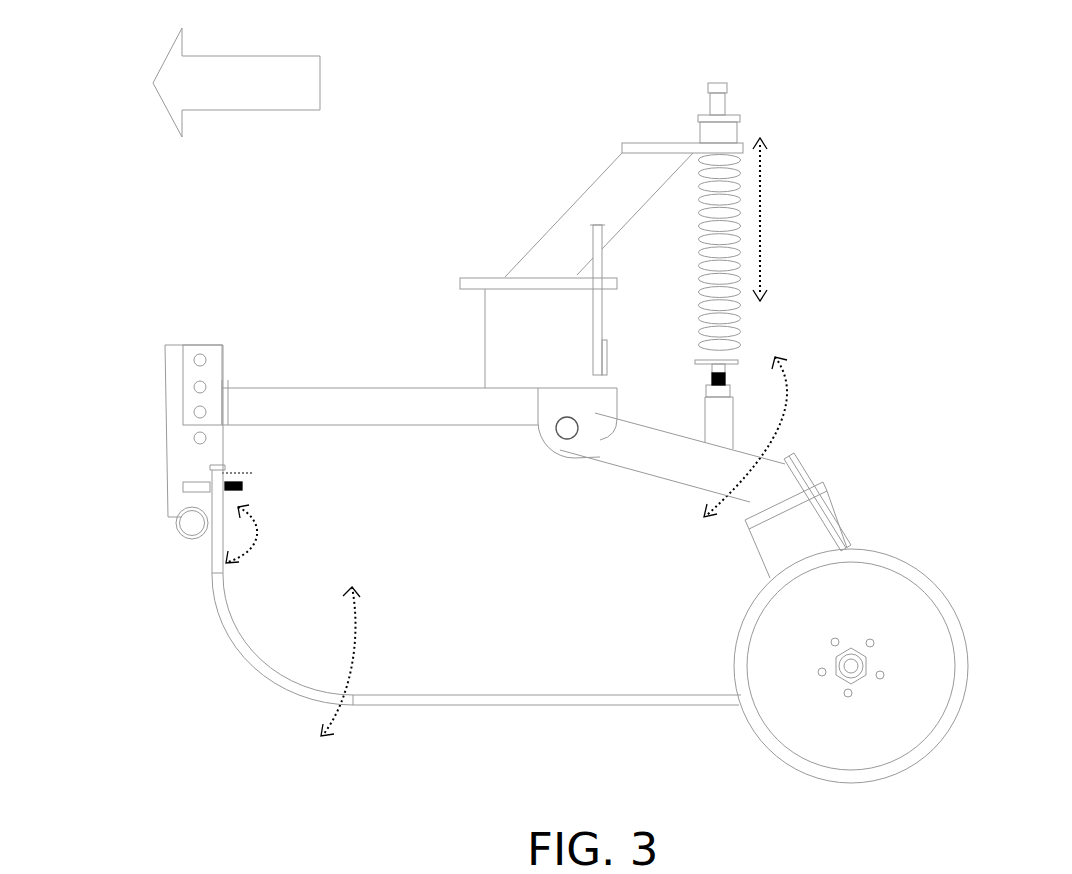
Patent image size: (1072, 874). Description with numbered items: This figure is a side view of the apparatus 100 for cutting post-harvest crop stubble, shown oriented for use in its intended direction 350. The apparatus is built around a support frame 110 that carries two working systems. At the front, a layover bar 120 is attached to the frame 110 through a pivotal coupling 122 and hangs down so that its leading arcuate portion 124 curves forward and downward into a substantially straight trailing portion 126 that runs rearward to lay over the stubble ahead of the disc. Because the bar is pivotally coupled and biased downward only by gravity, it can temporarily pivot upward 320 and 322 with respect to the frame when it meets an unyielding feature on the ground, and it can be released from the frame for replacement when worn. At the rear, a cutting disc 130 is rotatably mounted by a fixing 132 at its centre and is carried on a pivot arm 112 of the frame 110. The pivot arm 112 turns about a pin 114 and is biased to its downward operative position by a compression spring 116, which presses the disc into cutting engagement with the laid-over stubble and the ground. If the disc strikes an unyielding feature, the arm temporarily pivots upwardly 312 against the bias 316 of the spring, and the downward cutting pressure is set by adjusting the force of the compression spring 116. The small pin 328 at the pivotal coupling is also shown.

The apparatus 100 is at (150, 186).
The support frame 110 is at (370, 267).
The pivot arm 112 is at (662, 463).
The pin 114 is at (567, 428).
The compression spring 116 is at (727, 218).
The layover bar 120 is at (405, 705).
The pivotal coupling 122 is at (208, 516).
The leading arcuate portion 124 is at (240, 625).
The trailing portion 126 is at (680, 705).
The cutting disc 130 is at (900, 705).
The fixing 132 is at (850, 668).
The upward pivoting of pivot arm 312 is at (787, 393).
The bias 316 is at (760, 243).
The upward pivoting of layover bar 320 is at (353, 648).
The upward pivoting of layover bar 322 is at (257, 527).
The pin 328 is at (222, 483).
The intended direction of travel 350 is at (264, 83).